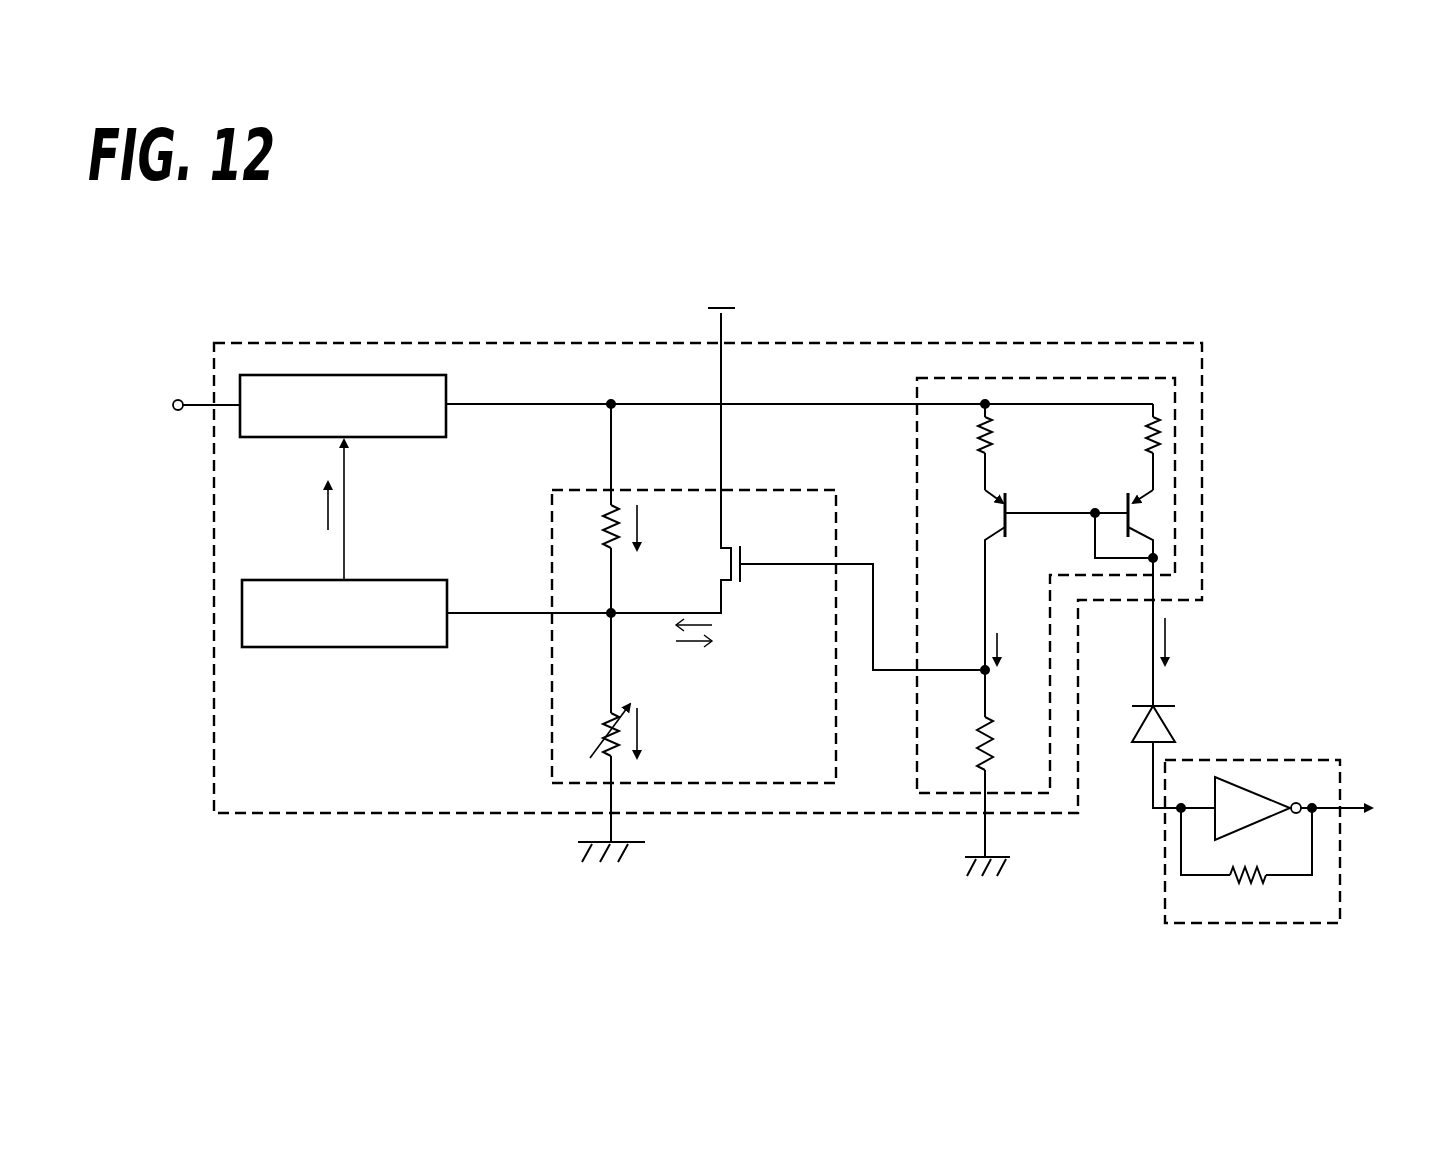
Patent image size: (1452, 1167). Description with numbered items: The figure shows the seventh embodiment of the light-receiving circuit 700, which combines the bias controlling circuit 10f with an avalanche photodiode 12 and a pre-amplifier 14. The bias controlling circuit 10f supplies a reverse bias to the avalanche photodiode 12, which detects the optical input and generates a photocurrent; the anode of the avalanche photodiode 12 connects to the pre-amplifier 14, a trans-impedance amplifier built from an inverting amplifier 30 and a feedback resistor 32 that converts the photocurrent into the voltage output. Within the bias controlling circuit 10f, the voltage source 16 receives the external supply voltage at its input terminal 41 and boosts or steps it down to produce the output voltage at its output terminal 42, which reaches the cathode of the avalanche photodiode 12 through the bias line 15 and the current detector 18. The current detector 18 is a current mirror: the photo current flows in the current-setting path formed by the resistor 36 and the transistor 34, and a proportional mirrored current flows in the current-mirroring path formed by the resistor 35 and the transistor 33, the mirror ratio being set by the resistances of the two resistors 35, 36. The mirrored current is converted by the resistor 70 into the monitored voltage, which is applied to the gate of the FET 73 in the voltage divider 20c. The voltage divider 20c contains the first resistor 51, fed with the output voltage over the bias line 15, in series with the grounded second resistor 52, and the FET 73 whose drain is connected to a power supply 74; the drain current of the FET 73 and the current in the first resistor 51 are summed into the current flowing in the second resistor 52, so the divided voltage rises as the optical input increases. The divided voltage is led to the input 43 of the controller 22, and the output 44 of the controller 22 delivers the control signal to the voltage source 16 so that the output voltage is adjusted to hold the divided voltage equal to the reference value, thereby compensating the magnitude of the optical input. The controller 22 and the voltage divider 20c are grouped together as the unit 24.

The light-receiving circuit 700 is at (781, 602).
The bias controlling circuit 10f is at (1062, 336).
The input terminal 41 is at (181, 396).
The voltage source 16 is at (343, 374).
The output terminal 42 is at (448, 430).
The bias line 15 is at (790, 402).
The controller 22 is at (375, 648).
The output of the controller 44 is at (346, 575).
The input of the controller 43 is at (449, 610).
The voltage divider 20c is at (550, 672).
The voltage control unit 24 is at (487, 726).
The first resistor 51 is at (625, 505).
The second resistor 52 is at (604, 763).
The FET 73 is at (746, 550).
The power supply 74 is at (726, 300).
The current detector 18 is at (1178, 457).
The resistor 35 is at (984, 400).
The resistor 36 is at (1160, 426).
The transistor 33 is at (1008, 537).
The transistor 34 is at (1127, 496).
The resistor 70 is at (990, 718).
The avalanche photodiode 12 is at (1160, 728).
The pre-amplifier 14 is at (1340, 876).
The inverting amplifier 30 is at (1240, 800).
The feedback resistor 32 is at (1243, 880).